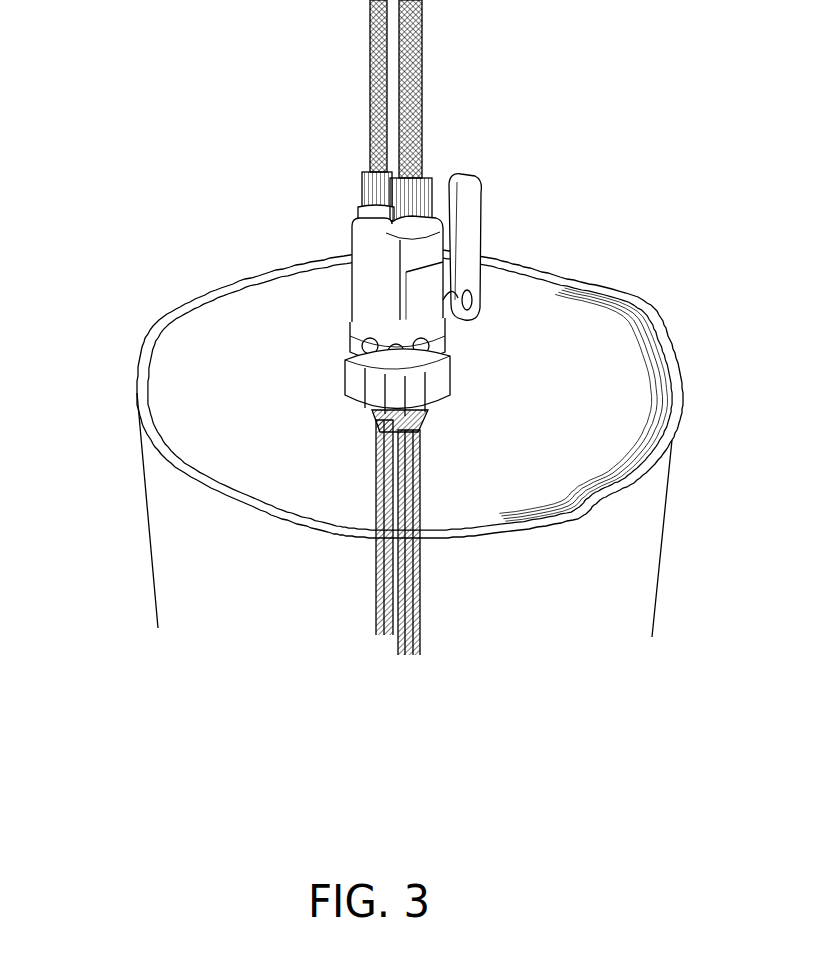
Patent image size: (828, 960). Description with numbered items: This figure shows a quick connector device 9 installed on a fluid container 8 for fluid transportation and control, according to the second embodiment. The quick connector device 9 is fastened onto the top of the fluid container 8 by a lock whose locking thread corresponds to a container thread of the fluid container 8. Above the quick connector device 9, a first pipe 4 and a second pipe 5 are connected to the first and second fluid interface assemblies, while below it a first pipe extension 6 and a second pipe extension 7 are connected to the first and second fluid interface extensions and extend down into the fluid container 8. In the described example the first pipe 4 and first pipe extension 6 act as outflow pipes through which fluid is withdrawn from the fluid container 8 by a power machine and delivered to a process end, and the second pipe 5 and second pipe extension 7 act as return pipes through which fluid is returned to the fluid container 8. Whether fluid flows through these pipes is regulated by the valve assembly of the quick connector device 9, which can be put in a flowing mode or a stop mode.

The first pipe 4 is at (412, 158).
The second pipe 5 is at (373, 122).
The first pipe extension 6 is at (412, 516).
The second pipe extension 7 is at (378, 490).
The fluid container 8 is at (207, 443).
The valve 9 is at (367, 247).